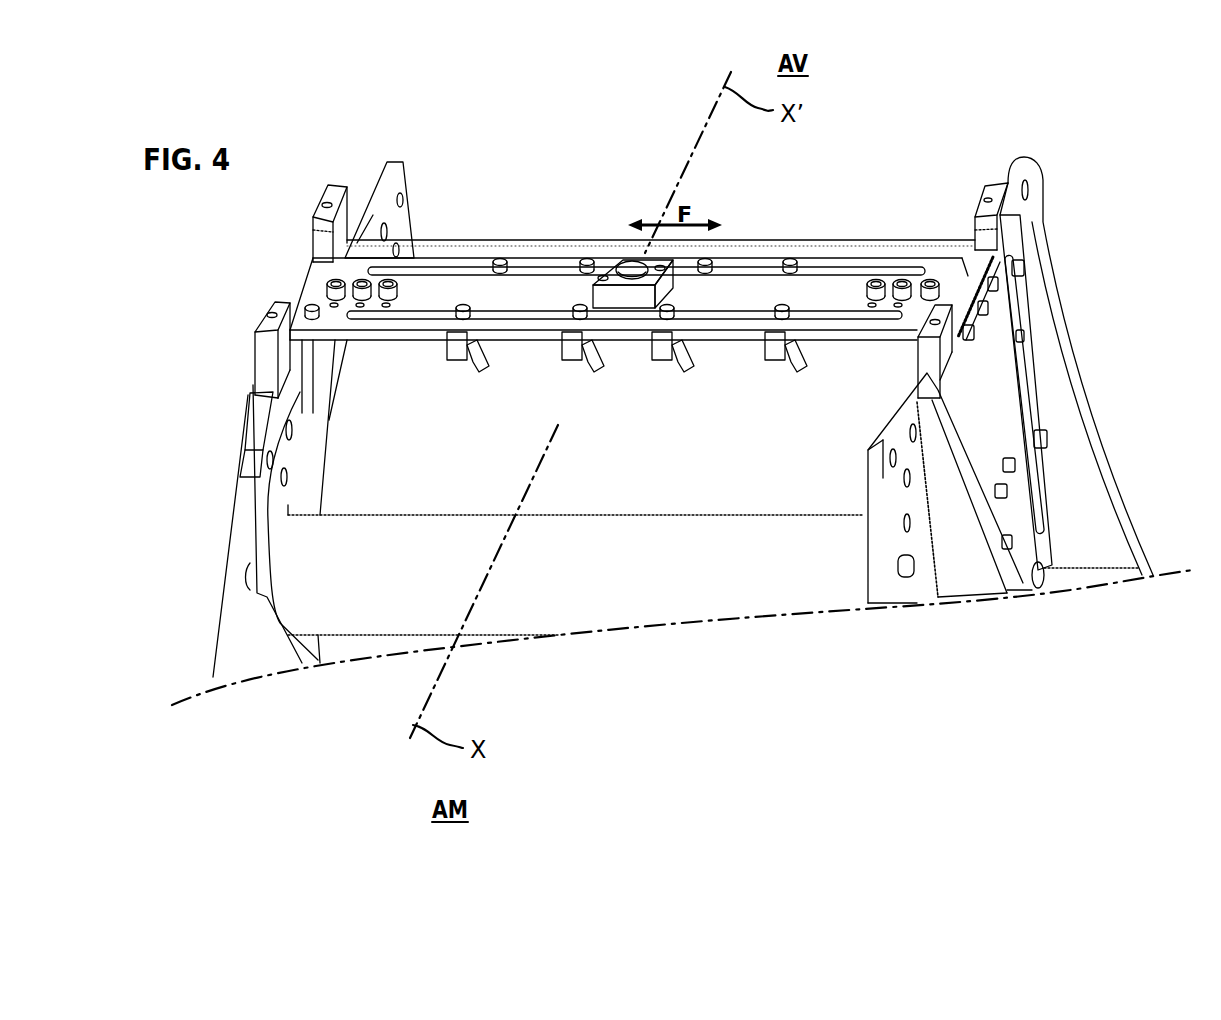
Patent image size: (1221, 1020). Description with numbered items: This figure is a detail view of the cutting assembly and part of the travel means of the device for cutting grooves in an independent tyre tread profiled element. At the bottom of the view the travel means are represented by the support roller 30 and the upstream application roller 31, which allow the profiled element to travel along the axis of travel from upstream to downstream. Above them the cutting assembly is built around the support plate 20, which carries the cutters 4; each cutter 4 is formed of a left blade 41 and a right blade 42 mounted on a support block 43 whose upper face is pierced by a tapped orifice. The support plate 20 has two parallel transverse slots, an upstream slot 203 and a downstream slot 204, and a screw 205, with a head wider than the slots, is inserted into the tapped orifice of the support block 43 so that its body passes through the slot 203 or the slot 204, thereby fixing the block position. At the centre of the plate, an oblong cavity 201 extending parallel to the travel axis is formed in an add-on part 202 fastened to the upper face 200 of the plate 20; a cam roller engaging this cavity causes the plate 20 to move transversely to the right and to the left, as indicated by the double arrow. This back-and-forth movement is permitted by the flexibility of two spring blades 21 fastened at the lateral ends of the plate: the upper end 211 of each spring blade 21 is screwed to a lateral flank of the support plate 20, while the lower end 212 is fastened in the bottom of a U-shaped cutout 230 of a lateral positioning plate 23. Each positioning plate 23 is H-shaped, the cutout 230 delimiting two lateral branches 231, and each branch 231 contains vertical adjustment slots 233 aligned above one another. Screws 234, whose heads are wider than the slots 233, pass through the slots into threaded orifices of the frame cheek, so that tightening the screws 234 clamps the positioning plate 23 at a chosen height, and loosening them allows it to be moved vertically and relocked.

The cutter 4 is at (813, 695).
The support plate 20 is at (827, 290).
The spring blade 21 is at (987, 390).
The lateral positioning plate 23 is at (268, 356).
The support roller 30 is at (437, 463).
The upstream application roller 31 is at (367, 565).
The left blade 41 is at (456, 374).
The right blade 42 is at (525, 240).
The support block 43 is at (458, 348).
The upper face 200 is at (748, 268).
The oblong cavity 201 is at (631, 260).
The add-on part 202 is at (610, 273).
The upstream slot 203 is at (843, 313).
The downstream slot 204 is at (805, 270).
The screw 205 is at (500, 258).
The upper end of spring blade 211 is at (977, 335).
The lower end of spring blade 212 is at (993, 467).
The U-shaped cutout 230 is at (1000, 417).
The lateral branch 231 is at (947, 330).
The vertical adjustment slot 233 is at (1024, 337).
The screw 234 is at (1025, 268).